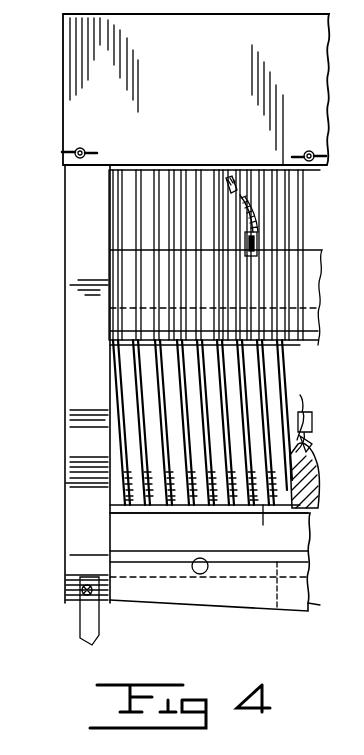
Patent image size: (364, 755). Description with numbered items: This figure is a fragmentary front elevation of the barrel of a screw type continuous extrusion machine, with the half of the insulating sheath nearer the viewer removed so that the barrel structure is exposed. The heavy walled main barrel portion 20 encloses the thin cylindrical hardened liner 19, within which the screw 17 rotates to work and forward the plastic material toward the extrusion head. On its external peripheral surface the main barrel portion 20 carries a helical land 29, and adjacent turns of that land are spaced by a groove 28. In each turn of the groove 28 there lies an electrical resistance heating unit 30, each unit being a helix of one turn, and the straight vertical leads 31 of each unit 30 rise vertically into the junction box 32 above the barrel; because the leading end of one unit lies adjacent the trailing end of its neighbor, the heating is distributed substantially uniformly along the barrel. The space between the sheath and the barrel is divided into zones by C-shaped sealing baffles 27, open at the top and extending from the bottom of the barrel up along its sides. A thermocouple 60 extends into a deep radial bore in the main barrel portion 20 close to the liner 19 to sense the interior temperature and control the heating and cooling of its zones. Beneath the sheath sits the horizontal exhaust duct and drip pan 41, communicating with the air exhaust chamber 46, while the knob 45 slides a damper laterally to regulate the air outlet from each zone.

The junction box 32 is at (77, 106).
The straight vertical leads 31 is at (138, 236).
The thermocouple 60 is at (250, 278).
The sealing baffle 27 is at (272, 322).
The helical land 29 is at (150, 380).
The electrical resistance heating unit 30 is at (150, 442).
The groove 28 is at (128, 508).
The screw 17 is at (304, 408).
The cylindrical hardened liner 19 is at (306, 438).
The main barrel portion 20 is at (306, 496).
The knob 45 is at (200, 575).
The air exhaust chamber 46 is at (236, 612).
The exhaust duct and drip pan 41 is at (336, 607).